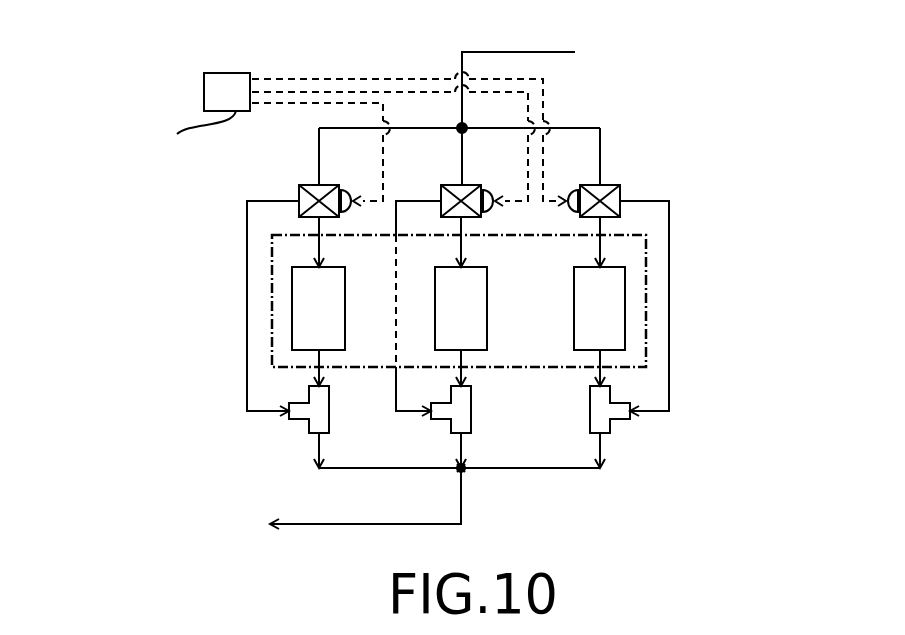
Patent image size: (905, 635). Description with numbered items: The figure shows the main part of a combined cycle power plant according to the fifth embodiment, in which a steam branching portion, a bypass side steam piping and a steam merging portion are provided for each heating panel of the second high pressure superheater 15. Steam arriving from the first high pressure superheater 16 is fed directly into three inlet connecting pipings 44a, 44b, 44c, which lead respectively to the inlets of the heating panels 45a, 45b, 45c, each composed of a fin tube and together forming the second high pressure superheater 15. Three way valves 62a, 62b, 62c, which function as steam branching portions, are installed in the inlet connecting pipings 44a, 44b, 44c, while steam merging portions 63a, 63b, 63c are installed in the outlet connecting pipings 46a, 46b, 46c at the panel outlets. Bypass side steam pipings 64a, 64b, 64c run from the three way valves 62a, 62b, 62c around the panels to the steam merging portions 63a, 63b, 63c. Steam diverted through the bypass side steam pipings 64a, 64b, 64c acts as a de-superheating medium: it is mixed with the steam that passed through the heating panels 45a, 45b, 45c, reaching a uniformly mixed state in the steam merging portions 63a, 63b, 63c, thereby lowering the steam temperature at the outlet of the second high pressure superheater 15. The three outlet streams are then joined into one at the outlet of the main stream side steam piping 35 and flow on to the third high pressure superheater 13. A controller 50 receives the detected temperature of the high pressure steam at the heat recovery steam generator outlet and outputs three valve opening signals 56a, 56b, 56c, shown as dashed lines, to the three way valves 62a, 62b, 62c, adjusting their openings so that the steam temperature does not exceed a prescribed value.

The first high pressure superheater 16 is at (563, 92).
The third high pressure superheater 13 is at (315, 498).
The main stream side steam piping 35 is at (464, 507).
The controller 50 is at (204, 96).
The valve opening signal 56a is at (312, 103).
The valve opening signal 56b is at (363, 92).
The valve opening signal 56c is at (390, 80).
The inlet connecting piping 44a is at (318, 155).
The inlet connecting piping 44b is at (460, 154).
The inlet connecting piping 44c is at (604, 134).
The three way valve 62a is at (339, 186).
The three way valve 62b is at (483, 186).
The three way valve 62c is at (623, 190).
The bypass side steam piping 64a is at (247, 263).
The bypass side steam piping 64b is at (397, 283).
The bypass side steam piping 64c is at (671, 262).
The second high pressure superheater 15 is at (648, 307).
The heating panel 45a is at (318, 283).
The heating panel 45b is at (461, 283).
The heating panel 45c is at (599, 283).
The steam merging portion 63a is at (331, 400).
The steam merging portion 63b is at (473, 400).
The steam merging portion 63c is at (589, 420).
The outlet connecting piping 46a is at (322, 452).
The outlet connecting piping 46b is at (464, 452).
The outlet connecting piping 46c is at (603, 450).